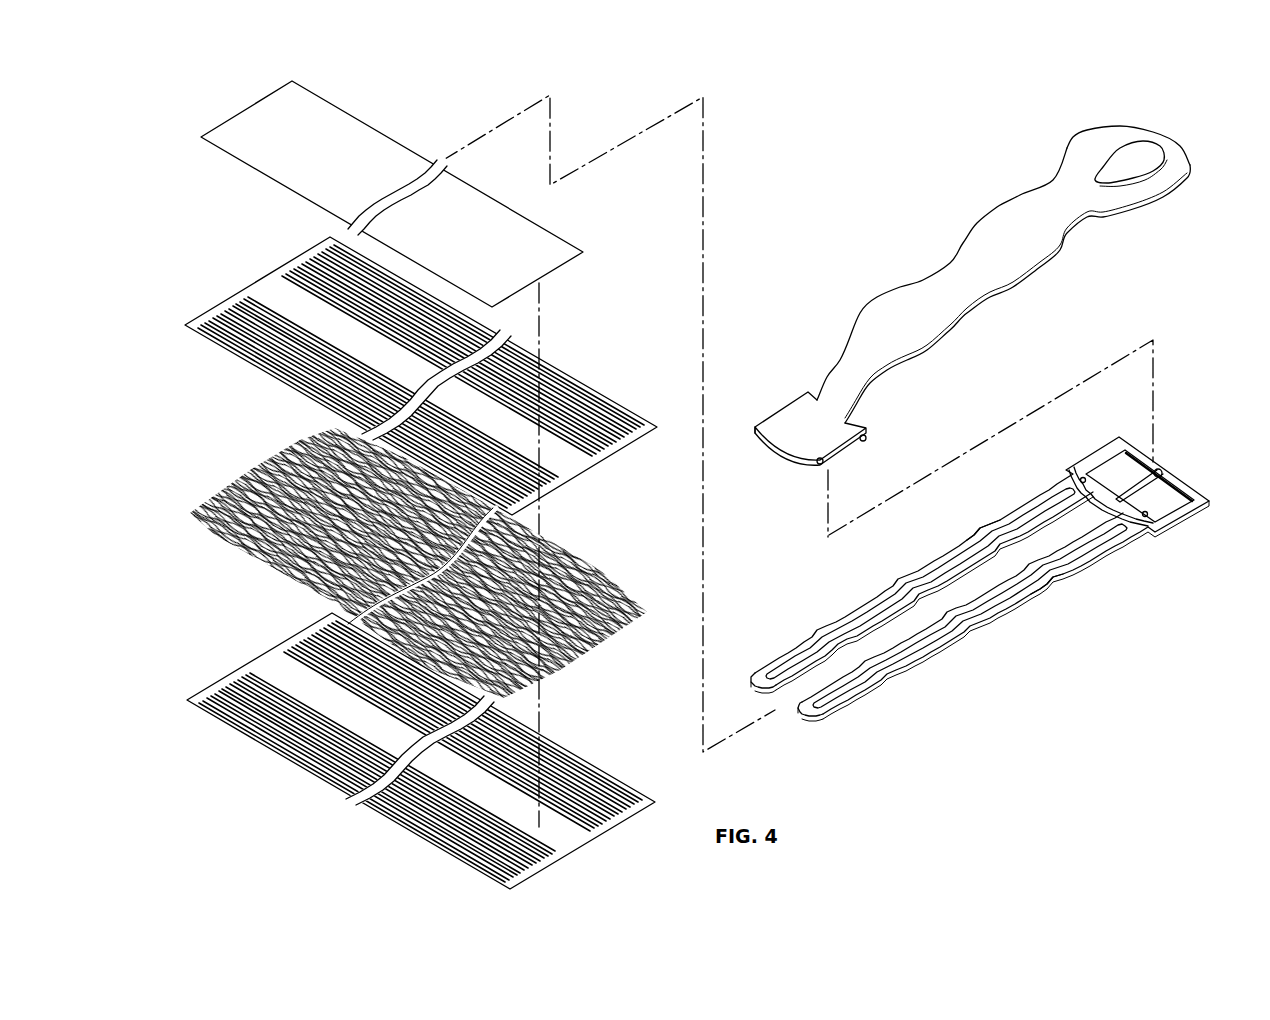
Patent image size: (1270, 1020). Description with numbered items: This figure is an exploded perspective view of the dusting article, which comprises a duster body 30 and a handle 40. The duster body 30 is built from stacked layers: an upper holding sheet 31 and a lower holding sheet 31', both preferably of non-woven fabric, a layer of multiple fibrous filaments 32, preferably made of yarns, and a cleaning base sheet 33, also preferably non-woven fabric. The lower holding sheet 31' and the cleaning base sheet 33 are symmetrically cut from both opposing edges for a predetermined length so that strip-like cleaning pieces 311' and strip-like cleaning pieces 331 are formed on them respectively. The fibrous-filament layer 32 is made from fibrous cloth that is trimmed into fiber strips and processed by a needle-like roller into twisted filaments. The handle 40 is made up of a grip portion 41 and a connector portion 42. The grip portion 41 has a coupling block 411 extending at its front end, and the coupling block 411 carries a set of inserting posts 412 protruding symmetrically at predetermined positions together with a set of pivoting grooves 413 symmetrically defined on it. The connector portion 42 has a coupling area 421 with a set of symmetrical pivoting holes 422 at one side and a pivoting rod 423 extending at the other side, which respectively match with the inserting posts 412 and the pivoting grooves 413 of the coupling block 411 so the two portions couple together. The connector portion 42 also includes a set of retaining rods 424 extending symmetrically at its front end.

The duster body 30 is at (636, 490).
The holding sheet 31 is at (418, 194).
The holding sheet 31' is at (413, 364).
The strip-like cleaning pieces 311' is at (407, 360).
The fibrous-filament layer 32 is at (603, 650).
The cleaning base sheet 33 is at (312, 788).
The strip-like cleaning pieces 331 is at (223, 708).
The handle 40 is at (1102, 606).
The grip portion 41 is at (1070, 263).
The coupling block 411 is at (787, 427).
The inserting posts 412 is at (757, 423).
The pivoting grooves 413 is at (863, 441).
The connector portion 42 is at (963, 648).
The coupling area 421 is at (1160, 488).
The pivoting holes 422 is at (1083, 478).
The pivoting rod 423 is at (1170, 475).
The retaining rods 424 is at (963, 553).